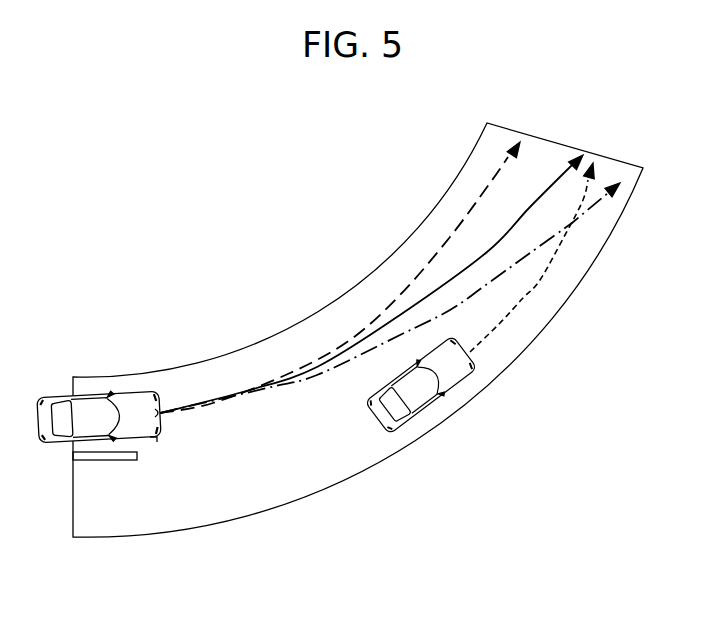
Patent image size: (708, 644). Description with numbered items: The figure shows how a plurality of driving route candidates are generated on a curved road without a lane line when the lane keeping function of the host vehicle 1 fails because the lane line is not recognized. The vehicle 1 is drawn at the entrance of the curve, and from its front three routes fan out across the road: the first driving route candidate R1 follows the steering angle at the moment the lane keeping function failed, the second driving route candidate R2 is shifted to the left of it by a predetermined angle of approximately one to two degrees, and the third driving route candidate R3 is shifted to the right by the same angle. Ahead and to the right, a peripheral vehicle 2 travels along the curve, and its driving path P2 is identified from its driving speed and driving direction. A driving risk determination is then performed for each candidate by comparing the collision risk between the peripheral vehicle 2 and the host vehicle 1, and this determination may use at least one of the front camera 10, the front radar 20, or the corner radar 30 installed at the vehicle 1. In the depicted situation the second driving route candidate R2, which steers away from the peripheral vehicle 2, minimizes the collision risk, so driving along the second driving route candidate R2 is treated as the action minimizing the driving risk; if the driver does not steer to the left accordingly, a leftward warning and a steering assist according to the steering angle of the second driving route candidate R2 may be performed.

The vehicle 1 is at (88, 412).
The peripheral vehicle 2 is at (425, 408).
The front camera 10 is at (110, 407).
The front radar 20 is at (161, 413).
The corner radar 30 is at (156, 443).
The first driving route candidate R1 is at (487, 252).
The second driving route candidate R2 is at (490, 191).
The third driving route candidate R3 is at (528, 256).
The driving path of the peripheral vehicle P2 is at (510, 313).